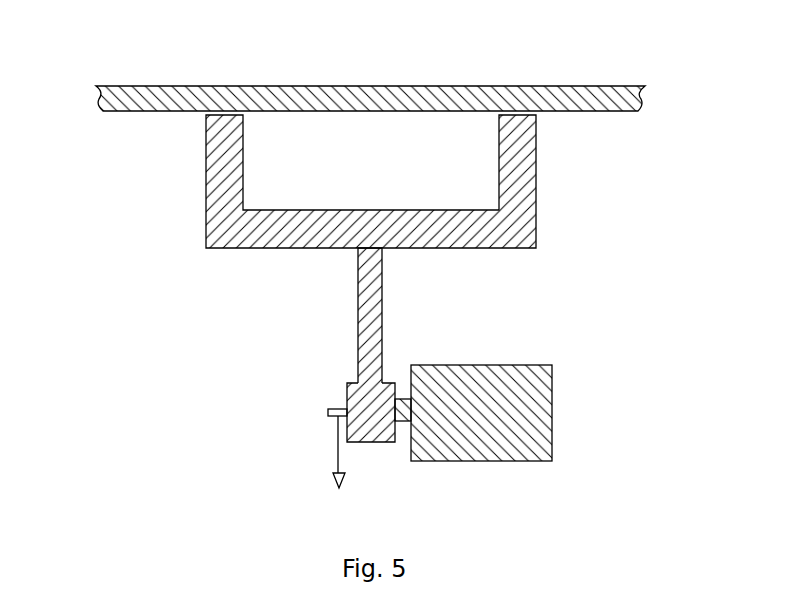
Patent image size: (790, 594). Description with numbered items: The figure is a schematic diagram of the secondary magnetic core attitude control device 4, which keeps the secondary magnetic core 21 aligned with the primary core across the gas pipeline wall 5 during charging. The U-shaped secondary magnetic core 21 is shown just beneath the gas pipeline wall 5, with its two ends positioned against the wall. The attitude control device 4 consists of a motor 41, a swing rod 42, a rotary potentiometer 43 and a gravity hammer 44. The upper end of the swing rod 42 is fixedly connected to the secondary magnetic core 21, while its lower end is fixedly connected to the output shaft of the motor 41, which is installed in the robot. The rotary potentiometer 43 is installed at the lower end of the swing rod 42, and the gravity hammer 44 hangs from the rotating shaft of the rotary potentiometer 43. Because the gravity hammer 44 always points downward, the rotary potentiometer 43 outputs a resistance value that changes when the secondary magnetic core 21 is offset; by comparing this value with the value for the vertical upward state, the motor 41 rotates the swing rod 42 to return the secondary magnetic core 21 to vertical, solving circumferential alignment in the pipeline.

The gas pipeline wall 5 is at (370, 97).
The secondary magnetic core 21 is at (522, 179).
The secondary magnetic core attitude control device 4 is at (393, 478).
The motor 41 is at (496, 435).
The swing rod 42 is at (368, 338).
The rotary potentiometer 43 is at (328, 410).
The gravity hammer 44 is at (334, 490).